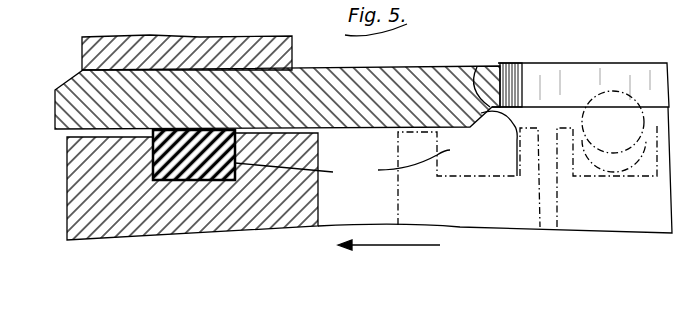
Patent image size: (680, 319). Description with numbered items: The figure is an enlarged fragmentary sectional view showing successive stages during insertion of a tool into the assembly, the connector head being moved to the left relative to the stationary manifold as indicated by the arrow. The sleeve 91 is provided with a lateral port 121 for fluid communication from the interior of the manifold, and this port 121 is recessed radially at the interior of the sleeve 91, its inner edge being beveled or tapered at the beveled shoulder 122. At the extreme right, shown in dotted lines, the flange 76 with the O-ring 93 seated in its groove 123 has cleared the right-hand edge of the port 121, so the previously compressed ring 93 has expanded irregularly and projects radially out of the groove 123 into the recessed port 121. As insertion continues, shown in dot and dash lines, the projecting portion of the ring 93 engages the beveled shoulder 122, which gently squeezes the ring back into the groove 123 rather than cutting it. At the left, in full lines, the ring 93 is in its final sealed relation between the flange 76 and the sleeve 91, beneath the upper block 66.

The upper block 66 is at (172, 48).
The sleeve 91 is at (437, 70).
The beveled shoulder 122 is at (477, 68).
The port 121 is at (523, 65).
The flange 76 is at (90, 208).
The O-ring 93 is at (160, 150).
The groove 123 is at (648, 155).